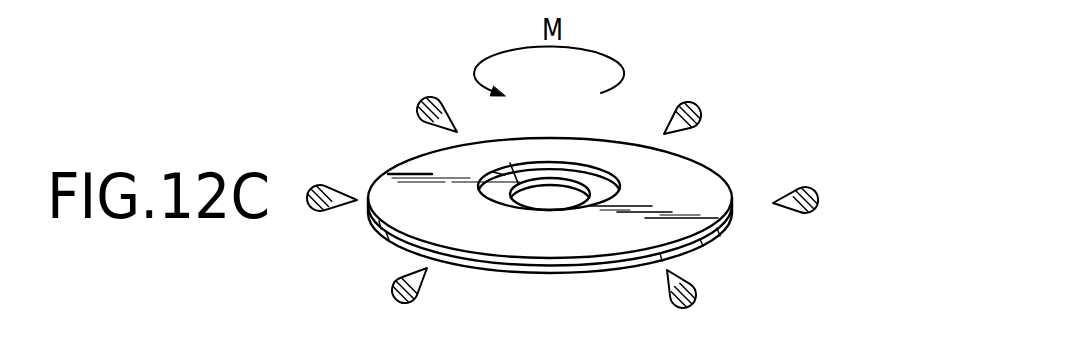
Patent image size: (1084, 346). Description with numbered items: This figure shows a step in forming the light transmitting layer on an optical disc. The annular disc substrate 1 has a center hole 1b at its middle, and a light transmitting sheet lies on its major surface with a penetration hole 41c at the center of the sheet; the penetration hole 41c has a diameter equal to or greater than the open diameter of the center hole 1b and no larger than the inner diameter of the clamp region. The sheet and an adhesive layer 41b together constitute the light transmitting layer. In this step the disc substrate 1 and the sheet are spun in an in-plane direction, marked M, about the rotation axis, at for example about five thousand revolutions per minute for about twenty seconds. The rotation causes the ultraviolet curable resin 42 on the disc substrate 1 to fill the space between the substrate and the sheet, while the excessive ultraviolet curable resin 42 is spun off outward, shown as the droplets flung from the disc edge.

The disc substrate 1 is at (717, 242).
The center hole 1b is at (505, 165).
The adhesive layer 41b is at (717, 175).
The penetration hole 41c is at (581, 166).
The ultraviolet curable resin 42 is at (703, 108).